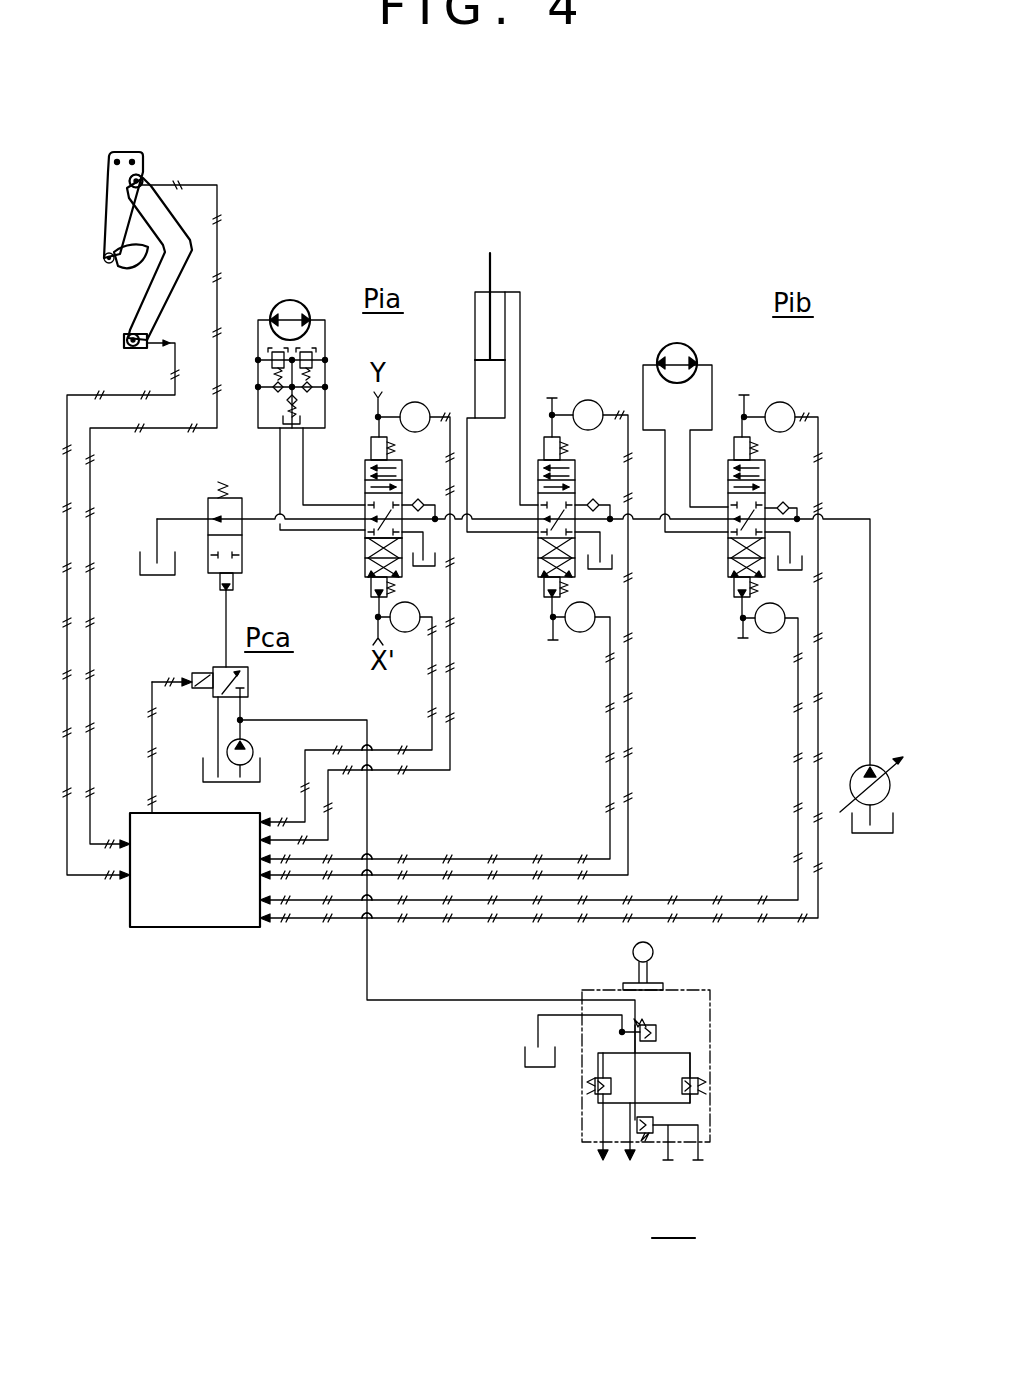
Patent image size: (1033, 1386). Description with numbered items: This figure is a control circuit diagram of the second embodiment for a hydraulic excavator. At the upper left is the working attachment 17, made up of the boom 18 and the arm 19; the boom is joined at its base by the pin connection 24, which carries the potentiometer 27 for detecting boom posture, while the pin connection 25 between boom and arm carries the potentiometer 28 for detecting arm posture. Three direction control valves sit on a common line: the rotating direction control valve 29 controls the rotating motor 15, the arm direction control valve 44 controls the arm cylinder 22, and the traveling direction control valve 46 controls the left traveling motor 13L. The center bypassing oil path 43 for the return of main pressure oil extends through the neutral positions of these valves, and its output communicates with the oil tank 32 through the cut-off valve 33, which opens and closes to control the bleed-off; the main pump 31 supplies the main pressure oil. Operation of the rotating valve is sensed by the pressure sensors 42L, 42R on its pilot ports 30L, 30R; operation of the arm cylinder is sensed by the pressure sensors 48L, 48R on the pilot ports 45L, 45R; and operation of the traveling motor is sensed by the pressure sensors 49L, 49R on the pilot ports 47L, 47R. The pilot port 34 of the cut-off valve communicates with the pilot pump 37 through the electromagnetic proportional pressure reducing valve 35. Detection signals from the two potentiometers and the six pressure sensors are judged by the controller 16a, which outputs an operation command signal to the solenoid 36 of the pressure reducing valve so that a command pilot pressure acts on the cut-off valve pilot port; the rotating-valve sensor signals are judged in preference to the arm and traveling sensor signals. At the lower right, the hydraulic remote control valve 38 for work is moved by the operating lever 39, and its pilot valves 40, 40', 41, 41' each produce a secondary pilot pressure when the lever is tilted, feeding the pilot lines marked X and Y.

The working attachment 17 is at (100, 164).
The arm 19 is at (108, 212).
The boom 18 is at (168, 300).
The pin connection 25 is at (141, 177).
The potentiometer 28 is at (143, 180).
The pin connection 24 is at (128, 336).
The potentiometer 27 is at (140, 348).
The rotating motor 15 is at (292, 299).
The arm cylinder 22 is at (505, 290).
The left traveling motor 13L is at (682, 343).
The rotating direction control valve 29 is at (398, 460).
The arm direction control valve 44 is at (574, 462).
The traveling direction control valve 46 is at (765, 462).
The center bypassing oil path 43 is at (365, 542).
The right pilot port 30R is at (372, 439).
The left pilot port 30L is at (375, 598).
The pressure sensor 42R is at (420, 401).
The pressure sensor 42L is at (405, 634).
The pilot port 45R is at (548, 436).
The pilot port 45L is at (551, 599).
The pressure sensor 48R is at (592, 399).
The pressure sensor 48L is at (578, 633).
The pilot port 47R is at (738, 437).
The pilot port 47L is at (737, 600).
The pressure sensor 49R is at (783, 402).
The pressure sensor 49L is at (768, 634).
The cut-off valve 33 is at (243, 566).
The pilot port 34 is at (238, 592).
The electromagnetic proportional pressure reducing valve 35 is at (216, 667).
The solenoid 36 is at (197, 674).
The pilot pump 37 is at (254, 744).
The oil tank 32 is at (153, 578).
The main pump 31 is at (862, 770).
The controller 16a is at (196, 928).
The hydraulic remote control valve 38 is at (642, 1086).
The operating lever 39 is at (633, 952).
The pilot valve 40 is at (568, 1102).
The pilot valve 40' is at (720, 1072).
The pilot valve 41 is at (670, 1158).
The pilot valve 41' is at (696, 1023).